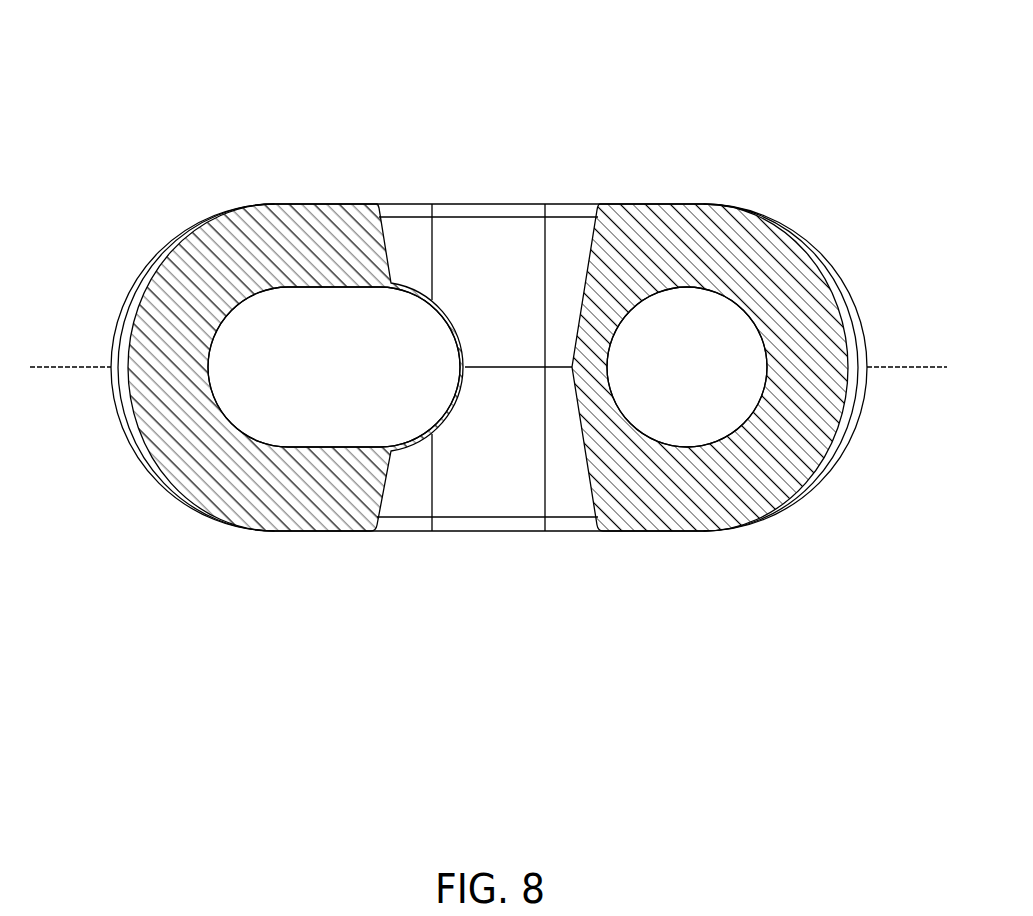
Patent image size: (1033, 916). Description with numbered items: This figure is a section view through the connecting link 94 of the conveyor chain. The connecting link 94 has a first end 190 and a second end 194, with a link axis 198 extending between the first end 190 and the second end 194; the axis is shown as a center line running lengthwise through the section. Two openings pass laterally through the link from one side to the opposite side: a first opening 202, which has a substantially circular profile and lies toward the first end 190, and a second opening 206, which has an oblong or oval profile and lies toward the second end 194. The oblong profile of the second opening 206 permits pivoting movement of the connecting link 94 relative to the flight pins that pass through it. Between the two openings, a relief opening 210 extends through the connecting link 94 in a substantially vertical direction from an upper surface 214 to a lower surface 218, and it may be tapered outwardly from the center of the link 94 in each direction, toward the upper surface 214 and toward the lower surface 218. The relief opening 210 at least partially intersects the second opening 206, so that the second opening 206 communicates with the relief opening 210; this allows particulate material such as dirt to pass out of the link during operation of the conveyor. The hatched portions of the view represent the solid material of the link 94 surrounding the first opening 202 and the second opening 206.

The connecting link 94 is at (683, 75).
The first end 190 is at (833, 255).
The second end 194 is at (140, 247).
The link axis 198 is at (68, 367).
The first opening 202 is at (700, 425).
The second opening 206 is at (233, 424).
The relief opening 210 is at (594, 256).
The upper surface 214 is at (325, 203).
The lower surface 218 is at (333, 532).